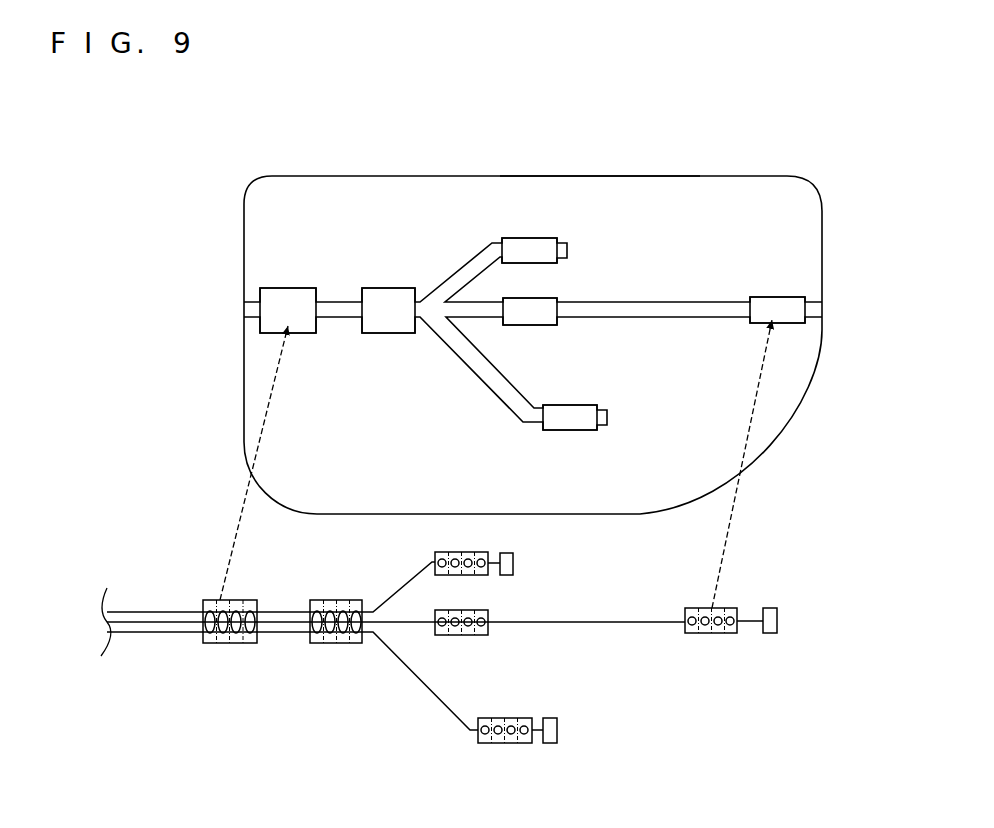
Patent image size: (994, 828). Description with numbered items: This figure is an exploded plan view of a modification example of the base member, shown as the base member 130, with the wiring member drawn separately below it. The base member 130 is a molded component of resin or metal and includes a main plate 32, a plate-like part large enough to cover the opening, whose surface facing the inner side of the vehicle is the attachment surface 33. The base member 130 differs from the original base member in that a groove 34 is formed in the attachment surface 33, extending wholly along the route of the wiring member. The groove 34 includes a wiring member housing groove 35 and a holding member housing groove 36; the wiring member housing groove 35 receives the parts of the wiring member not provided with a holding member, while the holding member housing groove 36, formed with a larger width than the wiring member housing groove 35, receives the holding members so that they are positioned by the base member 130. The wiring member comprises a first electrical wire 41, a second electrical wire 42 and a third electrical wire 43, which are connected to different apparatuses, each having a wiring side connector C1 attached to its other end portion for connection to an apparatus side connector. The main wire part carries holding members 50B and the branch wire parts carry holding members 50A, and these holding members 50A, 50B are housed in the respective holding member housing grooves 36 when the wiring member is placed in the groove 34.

The base member 130 is at (297, 174).
The main plate 32 is at (353, 176).
The attachment surface 33 is at (478, 190).
The groove 34 is at (358, 248).
The wiring member housing groove 35 is at (340, 300).
The holding member housing groove 36 is at (288, 294).
The first electrical wire 41 is at (423, 685).
The second electrical wire 42 is at (587, 621).
The third electrical wire 43 is at (410, 577).
The holding member 50A is at (472, 552).
The holding member 50B is at (220, 644).
The wiring side connector C1 is at (514, 563).